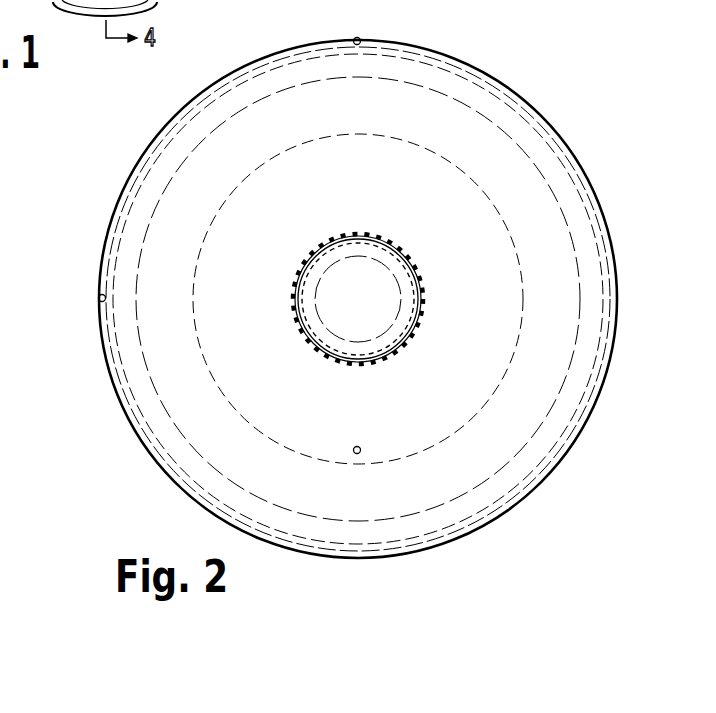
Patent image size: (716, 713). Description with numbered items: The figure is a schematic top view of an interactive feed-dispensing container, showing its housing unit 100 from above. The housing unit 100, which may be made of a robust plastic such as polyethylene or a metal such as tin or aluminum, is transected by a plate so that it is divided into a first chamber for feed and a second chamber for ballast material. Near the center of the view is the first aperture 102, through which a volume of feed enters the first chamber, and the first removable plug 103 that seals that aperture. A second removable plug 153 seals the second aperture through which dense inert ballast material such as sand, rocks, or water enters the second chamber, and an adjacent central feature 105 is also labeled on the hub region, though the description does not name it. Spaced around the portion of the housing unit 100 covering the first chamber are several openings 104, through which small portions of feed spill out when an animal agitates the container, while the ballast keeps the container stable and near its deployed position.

The housing unit 100 is at (121, 158).
The first aperture 102 is at (372, 236).
The first removable plug 103 is at (367, 281).
The openings 104 is at (353, 448).
The hub ring 105 is at (418, 270).
The second removable plug 153 is at (400, 246).